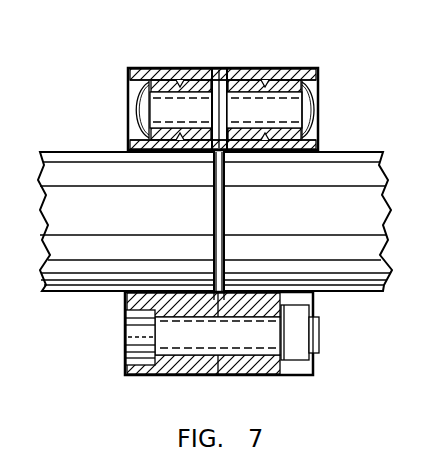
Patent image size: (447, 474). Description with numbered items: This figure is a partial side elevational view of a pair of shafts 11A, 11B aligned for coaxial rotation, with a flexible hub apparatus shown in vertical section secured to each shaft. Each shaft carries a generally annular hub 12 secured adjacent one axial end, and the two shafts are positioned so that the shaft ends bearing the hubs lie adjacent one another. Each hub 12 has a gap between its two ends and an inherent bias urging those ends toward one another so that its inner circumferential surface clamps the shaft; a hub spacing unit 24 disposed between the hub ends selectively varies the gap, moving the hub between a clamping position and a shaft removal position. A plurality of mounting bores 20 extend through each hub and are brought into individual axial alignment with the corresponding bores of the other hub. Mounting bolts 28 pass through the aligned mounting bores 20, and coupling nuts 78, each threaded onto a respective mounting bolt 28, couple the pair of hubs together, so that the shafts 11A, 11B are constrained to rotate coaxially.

The hub 12 is at (192, 68).
The hub spacing unit 24 is at (313, 102).
The shaft 11A is at (67, 173).
The shaft 11B is at (352, 172).
The mounting bore 20 is at (133, 375).
The mounting bolt 28 is at (125, 332).
The coupling nut 78 is at (300, 340).